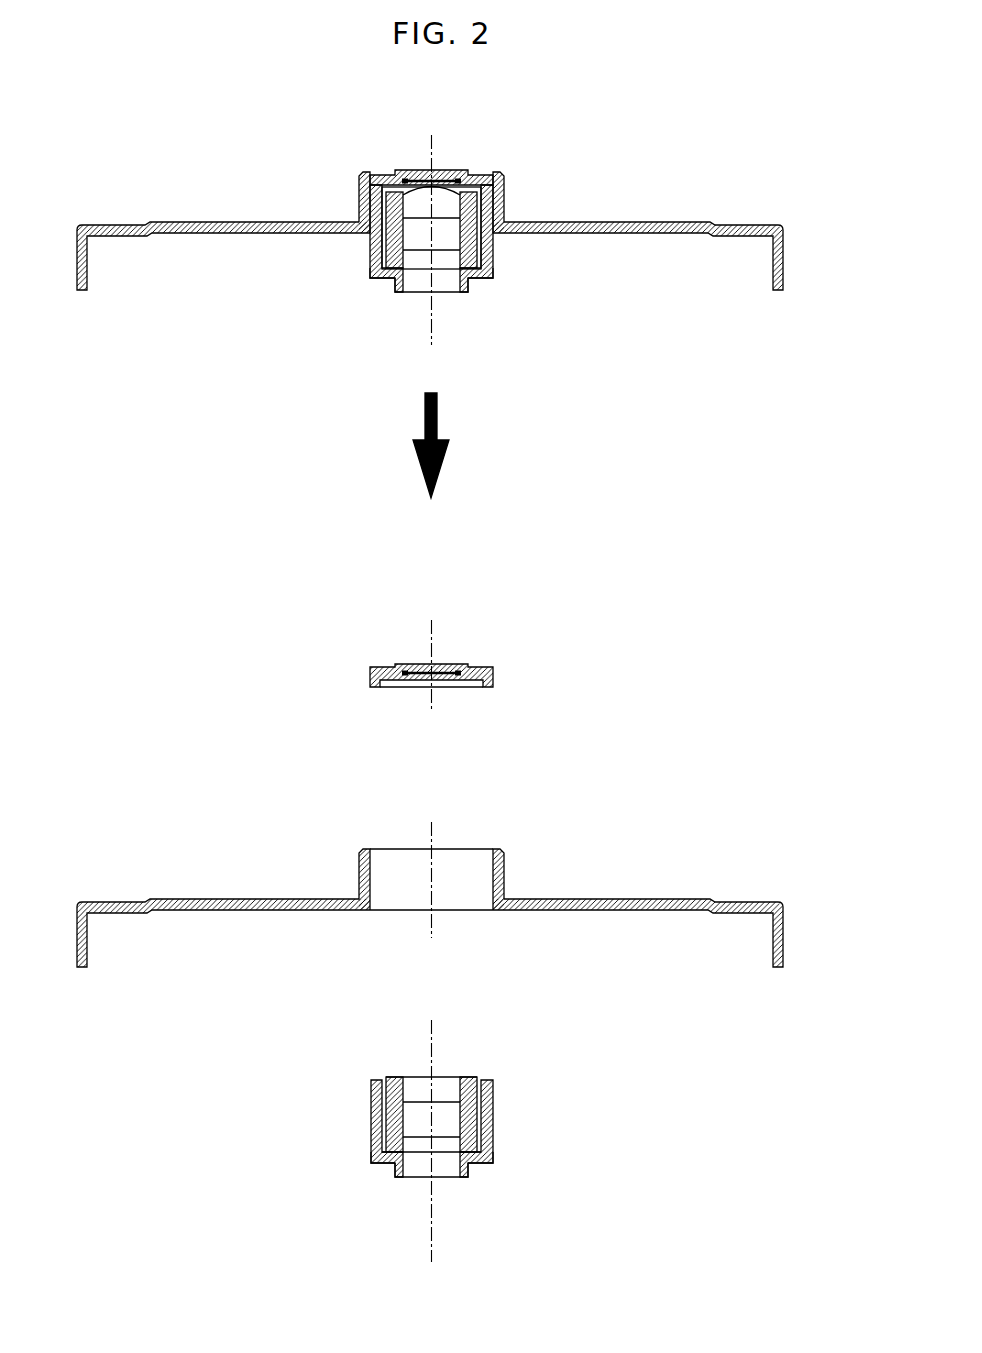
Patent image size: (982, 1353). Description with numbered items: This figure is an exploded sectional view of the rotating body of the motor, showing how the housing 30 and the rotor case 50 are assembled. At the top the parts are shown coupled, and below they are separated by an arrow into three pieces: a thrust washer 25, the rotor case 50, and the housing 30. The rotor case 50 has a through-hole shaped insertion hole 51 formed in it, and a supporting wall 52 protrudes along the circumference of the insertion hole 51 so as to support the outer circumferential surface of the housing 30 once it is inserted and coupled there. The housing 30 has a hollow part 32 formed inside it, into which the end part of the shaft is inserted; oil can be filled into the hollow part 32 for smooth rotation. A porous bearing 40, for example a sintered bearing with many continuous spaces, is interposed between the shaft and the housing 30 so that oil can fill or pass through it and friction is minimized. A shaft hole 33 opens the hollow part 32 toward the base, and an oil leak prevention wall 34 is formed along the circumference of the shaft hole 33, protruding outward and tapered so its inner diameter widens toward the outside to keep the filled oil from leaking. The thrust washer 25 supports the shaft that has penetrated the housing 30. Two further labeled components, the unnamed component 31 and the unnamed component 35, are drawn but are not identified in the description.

The thrust washer 25 is at (455, 174).
The housing 30 is at (232, 113).
The housing 31 is at (372, 215).
The hollow part 32 is at (368, 276).
The shaft hole 33 is at (462, 290).
The oil leak prevention wall 34 is at (466, 293).
The cap 35 is at (364, 172).
The porous bearing 40 is at (482, 270).
The rotor case 50 is at (653, 221).
The insertion hole 51 is at (370, 911).
The supporting wall 52 is at (503, 188).